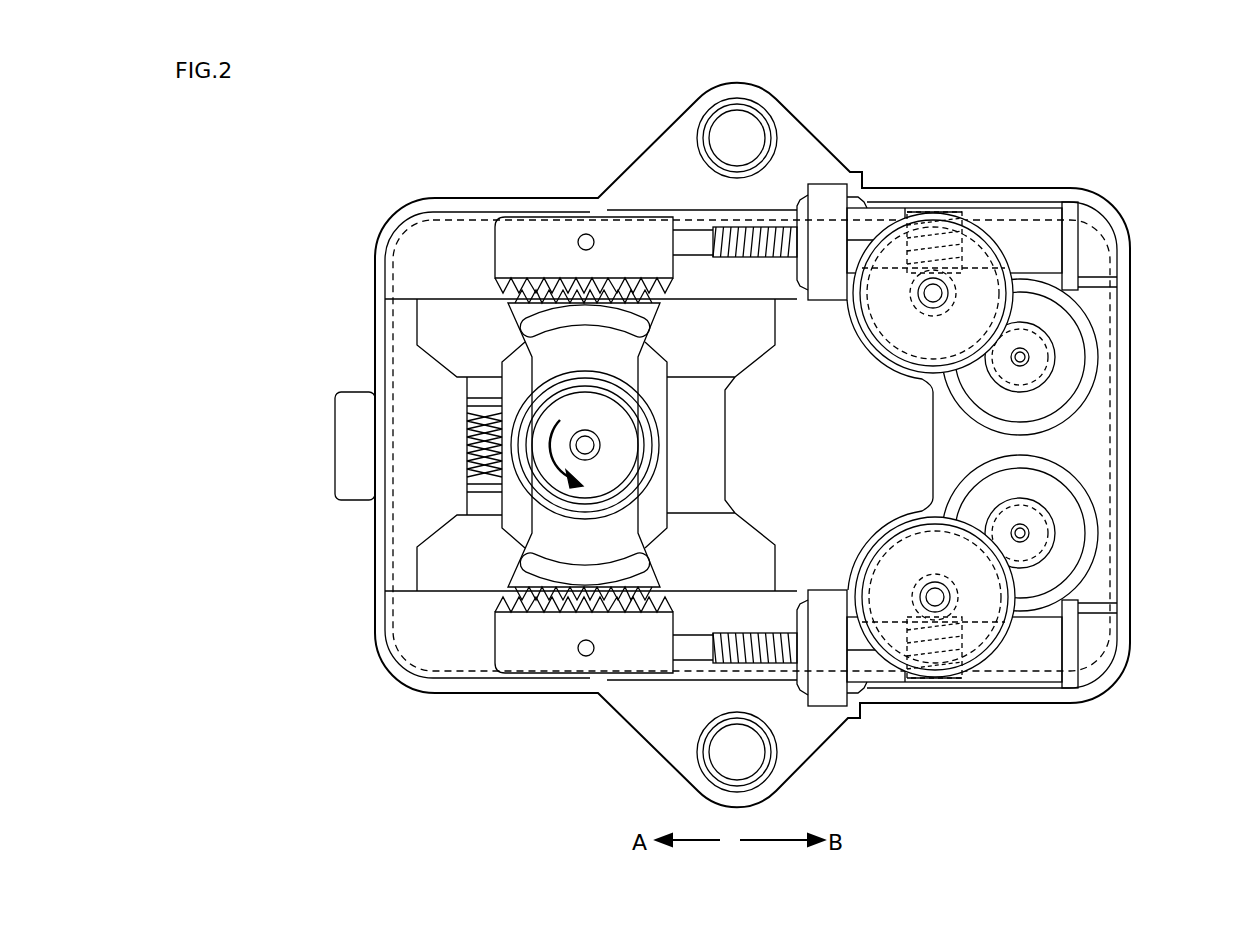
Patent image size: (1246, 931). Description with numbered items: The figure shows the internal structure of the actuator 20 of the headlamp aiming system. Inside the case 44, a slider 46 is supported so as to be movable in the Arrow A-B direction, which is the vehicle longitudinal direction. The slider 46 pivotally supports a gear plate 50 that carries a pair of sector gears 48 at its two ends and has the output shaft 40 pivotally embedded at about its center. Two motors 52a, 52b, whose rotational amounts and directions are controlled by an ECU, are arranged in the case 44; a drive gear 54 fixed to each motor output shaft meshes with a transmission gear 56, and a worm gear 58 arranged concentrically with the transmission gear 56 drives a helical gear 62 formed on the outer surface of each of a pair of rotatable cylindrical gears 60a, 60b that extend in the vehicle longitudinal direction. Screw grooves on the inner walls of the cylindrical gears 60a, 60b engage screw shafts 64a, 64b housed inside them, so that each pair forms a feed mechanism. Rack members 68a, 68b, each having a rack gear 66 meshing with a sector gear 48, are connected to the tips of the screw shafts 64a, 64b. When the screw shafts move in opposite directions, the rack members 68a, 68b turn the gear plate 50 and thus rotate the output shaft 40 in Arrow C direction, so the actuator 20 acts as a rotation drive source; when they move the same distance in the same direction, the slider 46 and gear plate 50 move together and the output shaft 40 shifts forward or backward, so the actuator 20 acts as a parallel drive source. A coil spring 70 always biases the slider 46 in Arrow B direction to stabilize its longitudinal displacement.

The actuator 20 is at (1107, 130).
The output shaft 40 is at (538, 397).
The case 44 is at (1118, 210).
The slider 46 is at (515, 365).
The sector gear 48 is at (545, 290).
The gear plate 50 is at (563, 345).
The motor 52a is at (1063, 337).
The motor 52b is at (1063, 553).
The drive gear 54 is at (1055, 357).
The transmission gear 56 is at (988, 260).
The worm gear 58 is at (897, 200).
The cylindrical gear 60a is at (872, 215).
The cylindrical gear 60b is at (870, 673).
The helical gear 62 is at (992, 207).
The screw shaft 64a is at (775, 235).
The screw shaft 64b is at (770, 655).
The rack gear 66 is at (497, 292).
The rack member 68a is at (516, 251).
The rack member 68b is at (517, 640).
The coil spring 70 is at (483, 457).